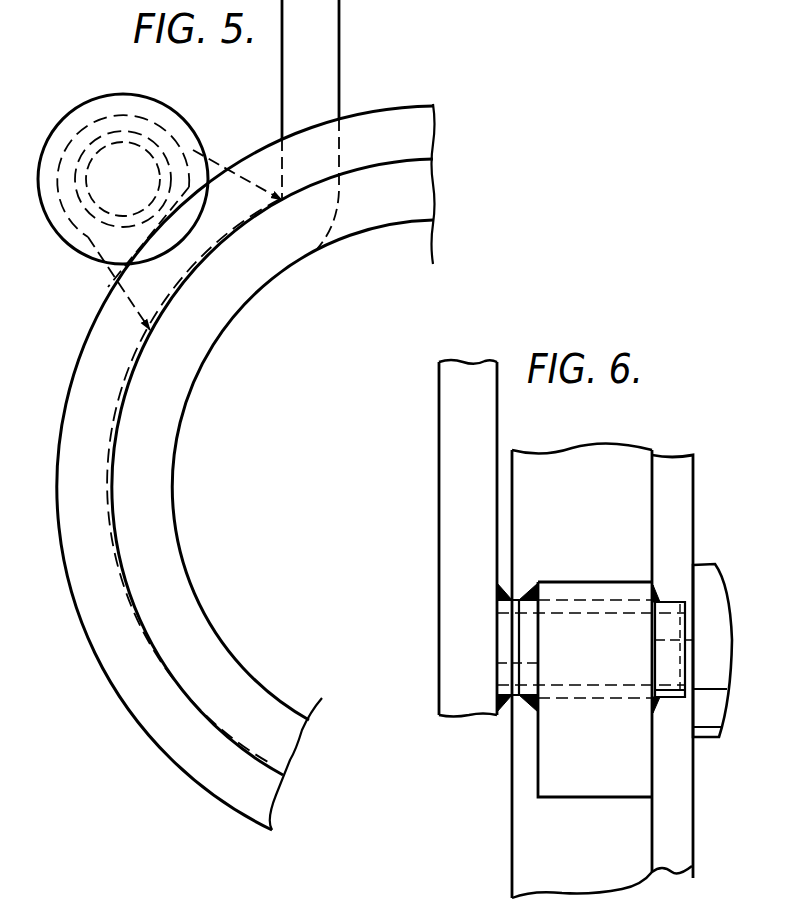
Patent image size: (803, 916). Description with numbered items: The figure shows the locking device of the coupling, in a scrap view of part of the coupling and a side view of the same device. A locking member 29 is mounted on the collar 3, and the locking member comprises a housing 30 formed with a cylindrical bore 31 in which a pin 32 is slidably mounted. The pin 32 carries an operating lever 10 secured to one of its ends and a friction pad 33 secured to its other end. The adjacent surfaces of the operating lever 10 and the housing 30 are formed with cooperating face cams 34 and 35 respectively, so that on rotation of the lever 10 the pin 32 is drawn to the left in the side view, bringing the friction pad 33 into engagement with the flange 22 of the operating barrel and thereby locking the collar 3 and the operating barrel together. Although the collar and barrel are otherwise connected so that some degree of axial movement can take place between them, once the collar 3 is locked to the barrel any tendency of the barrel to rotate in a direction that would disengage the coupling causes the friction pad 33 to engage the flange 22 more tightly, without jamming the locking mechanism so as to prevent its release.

In FIG. 5, the collar 3 is at (188, 354).
In FIG. 6, the collar 3 is at (523, 790).
In FIG. 6, the operating lever 10 is at (453, 432).
In FIG. 5, the flange 22 is at (90, 363).
In FIG. 6, the flange 22 is at (670, 789).
In FIG. 5, the locking member 29 is at (41, 151).
In FIG. 6, the locking member 29 is at (554, 579).
In FIG. 5, the housing 30 is at (113, 278).
In FIG. 6, the housing 30 is at (605, 580).
In FIG. 6, the cylindrical bore 31 is at (612, 679).
In FIG. 5, the pin 32 is at (133, 152).
In FIG. 6, the pin 32 is at (693, 640).
In FIG. 5, the friction pad 33 is at (53, 218).
In FIG. 6, the friction pad 33 is at (705, 585).
In FIG. 6, the face cam 34 is at (500, 635).
In FIG. 6, the face cam 35 is at (520, 670).